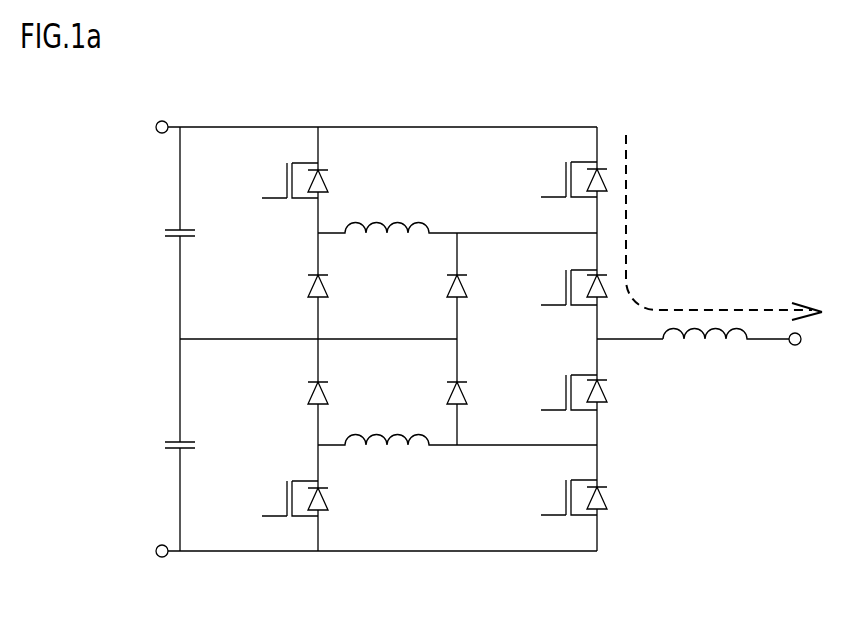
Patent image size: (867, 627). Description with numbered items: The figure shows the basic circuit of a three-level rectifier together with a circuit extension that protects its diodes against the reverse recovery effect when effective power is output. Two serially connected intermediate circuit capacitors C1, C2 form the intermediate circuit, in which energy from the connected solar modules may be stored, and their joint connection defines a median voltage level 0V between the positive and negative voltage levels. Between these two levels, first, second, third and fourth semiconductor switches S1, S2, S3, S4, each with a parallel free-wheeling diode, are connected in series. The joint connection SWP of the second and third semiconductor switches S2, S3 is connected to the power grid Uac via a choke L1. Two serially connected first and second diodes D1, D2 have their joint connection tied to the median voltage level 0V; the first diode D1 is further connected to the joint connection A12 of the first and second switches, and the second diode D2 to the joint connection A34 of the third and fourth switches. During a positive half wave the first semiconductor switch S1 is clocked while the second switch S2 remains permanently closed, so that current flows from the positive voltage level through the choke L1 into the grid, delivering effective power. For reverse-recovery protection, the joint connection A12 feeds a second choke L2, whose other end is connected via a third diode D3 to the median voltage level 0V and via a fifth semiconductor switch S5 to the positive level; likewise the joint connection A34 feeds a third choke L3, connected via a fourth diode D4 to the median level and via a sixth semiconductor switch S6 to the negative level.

The median voltage level 0V is at (300, 340).
The intermediate circuit capacitor C1 is at (165, 236).
The intermediate circuit capacitor C2 is at (162, 446).
The first semiconductor switch S1 is at (567, 177).
The second semiconductor switch S2 is at (568, 286).
The third semiconductor switch S3 is at (568, 394).
The fourth semiconductor switch S4 is at (566, 499).
The fifth semiconductor switch S5 is at (312, 176).
The sixth semiconductor switch S6 is at (313, 499).
The first diode D1 is at (439, 290).
The second diode D2 is at (440, 397).
The third diode D3 is at (299, 288).
The fourth diode D4 is at (298, 396).
The choke L1 is at (726, 354).
The second choke L2 is at (387, 210).
The third choke L3 is at (387, 458).
The joint connection of first and second semiconductor switches A12 is at (597, 233).
The joint connection of third and fourth semiconductor switches A34 is at (597, 445).
The joint connection of second and third semiconductor switches SWP is at (597, 339).
The power grid Uac is at (803, 359).